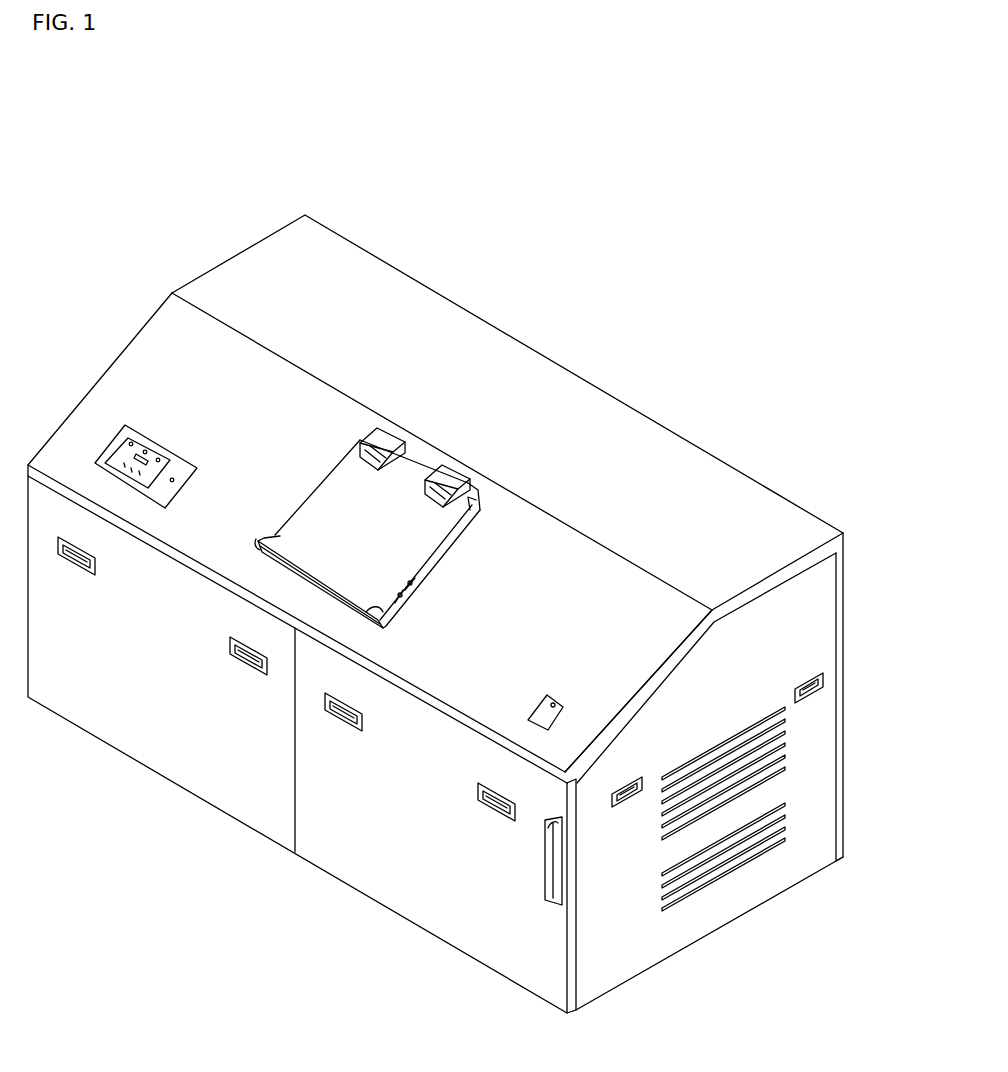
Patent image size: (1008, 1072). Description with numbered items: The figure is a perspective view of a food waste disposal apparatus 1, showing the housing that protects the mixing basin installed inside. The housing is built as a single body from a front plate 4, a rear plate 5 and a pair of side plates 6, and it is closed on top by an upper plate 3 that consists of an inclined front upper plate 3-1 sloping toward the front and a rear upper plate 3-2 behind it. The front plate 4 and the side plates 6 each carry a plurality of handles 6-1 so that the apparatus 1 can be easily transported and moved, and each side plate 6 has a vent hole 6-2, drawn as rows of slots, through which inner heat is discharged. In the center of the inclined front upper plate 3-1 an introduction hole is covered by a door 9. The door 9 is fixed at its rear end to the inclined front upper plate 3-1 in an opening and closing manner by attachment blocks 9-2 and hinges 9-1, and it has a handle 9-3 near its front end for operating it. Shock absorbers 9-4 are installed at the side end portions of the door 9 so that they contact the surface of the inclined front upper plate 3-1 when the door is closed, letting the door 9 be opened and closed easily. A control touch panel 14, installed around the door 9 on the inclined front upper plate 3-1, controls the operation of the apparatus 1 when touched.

The food waste disposal apparatus 1 is at (131, 112).
The upper plate 3 is at (435, 493).
The inclined front upper plate 3-1 is at (533, 520).
The rear upper plate 3-2 is at (693, 475).
The front plate 4 is at (337, 828).
The rear plate 5 is at (845, 600).
The side plate 6 is at (625, 928).
The handle 6-1 is at (232, 655).
The vent hole 6-2 is at (785, 768).
The door 9 is at (338, 500).
The hinge 9-1 is at (387, 438).
The attachment block 9-2 is at (500, 475).
The handle 9-3 is at (385, 605).
The shock absorber 9-4 is at (438, 553).
The control touch panel 14 is at (115, 445).